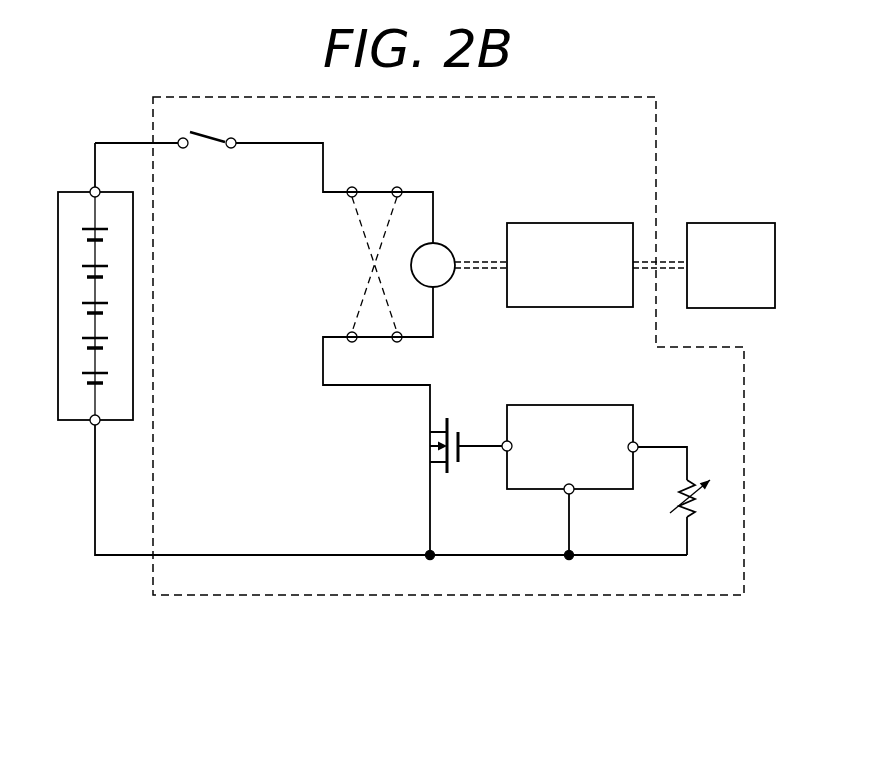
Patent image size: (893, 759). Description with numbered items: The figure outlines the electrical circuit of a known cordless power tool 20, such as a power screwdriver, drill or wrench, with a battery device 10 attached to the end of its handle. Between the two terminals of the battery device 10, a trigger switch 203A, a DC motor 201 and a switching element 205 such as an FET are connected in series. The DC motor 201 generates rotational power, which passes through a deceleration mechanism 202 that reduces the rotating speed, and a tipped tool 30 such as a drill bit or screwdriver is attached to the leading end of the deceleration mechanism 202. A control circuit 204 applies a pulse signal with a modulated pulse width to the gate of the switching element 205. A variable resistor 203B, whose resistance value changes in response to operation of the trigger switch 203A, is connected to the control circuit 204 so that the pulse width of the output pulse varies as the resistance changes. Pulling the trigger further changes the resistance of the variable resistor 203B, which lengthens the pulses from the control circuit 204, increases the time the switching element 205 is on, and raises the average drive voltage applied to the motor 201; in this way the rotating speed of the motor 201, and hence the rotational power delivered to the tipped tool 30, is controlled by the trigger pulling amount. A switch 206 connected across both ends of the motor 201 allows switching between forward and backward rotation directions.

The battery device 10 is at (58, 287).
The power tool 20 is at (475, 598).
The tipped tool 30 is at (750, 222).
The DC motor 201 is at (448, 235).
The deceleration mechanism 202 is at (592, 222).
The trigger switch 203A is at (205, 148).
The variable resistor 203B is at (700, 505).
The control circuit 204 is at (633, 405).
The switching element 205 is at (431, 440).
The switch 206 is at (355, 262).